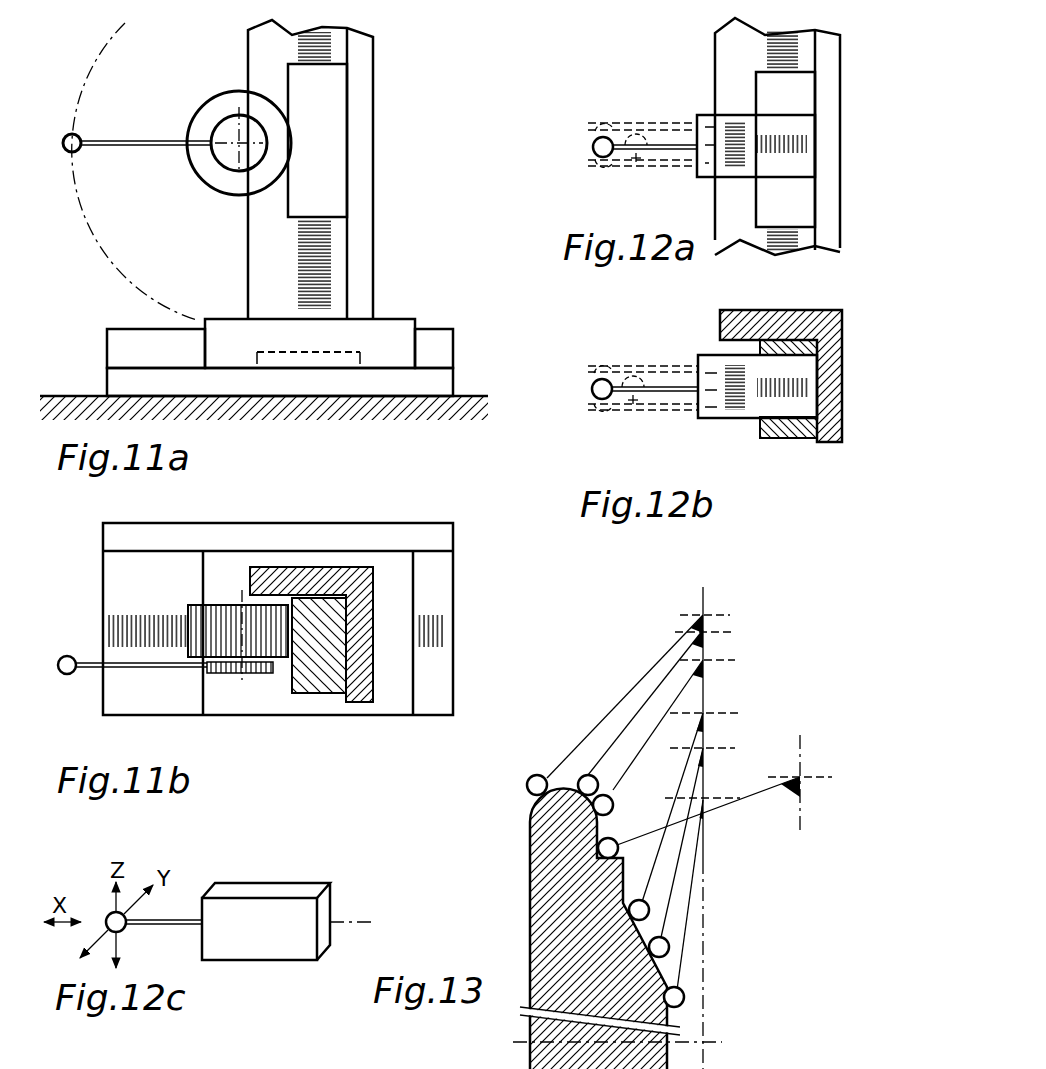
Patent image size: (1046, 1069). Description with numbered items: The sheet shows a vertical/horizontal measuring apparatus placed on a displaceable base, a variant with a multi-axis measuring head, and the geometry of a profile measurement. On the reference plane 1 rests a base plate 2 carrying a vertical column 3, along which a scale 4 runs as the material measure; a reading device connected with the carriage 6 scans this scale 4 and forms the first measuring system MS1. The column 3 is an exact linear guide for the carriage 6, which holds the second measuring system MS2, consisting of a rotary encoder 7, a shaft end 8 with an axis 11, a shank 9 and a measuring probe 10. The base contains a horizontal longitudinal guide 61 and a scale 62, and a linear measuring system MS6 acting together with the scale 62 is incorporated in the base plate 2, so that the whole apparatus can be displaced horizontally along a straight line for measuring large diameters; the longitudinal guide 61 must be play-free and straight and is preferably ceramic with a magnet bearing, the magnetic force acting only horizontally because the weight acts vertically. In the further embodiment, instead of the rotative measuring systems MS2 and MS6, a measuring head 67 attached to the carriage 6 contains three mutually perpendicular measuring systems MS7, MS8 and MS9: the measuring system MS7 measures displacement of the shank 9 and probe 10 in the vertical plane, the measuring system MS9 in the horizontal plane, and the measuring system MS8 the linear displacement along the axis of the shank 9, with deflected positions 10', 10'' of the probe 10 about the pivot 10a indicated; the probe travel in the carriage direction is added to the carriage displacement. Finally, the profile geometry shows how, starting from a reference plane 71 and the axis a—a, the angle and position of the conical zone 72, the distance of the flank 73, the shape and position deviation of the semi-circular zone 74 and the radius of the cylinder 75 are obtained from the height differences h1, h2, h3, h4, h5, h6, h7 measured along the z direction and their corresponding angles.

In FIG. 11A, the reference plane 1 is at (72, 396).
In FIG. 11A, the base plate 2 is at (398, 325).
In FIG. 11B, the base plate 2 is at (397, 702).
In FIG. 11A, the vertical column 3 is at (363, 170).
In FIG. 11B, the vertical column 3 is at (353, 697).
In FIG. 12A, the vertical column 3 is at (830, 228).
In FIG. 12B, the vertical column 3 is at (835, 337).
In FIG. 11A, the scale 4 is at (318, 265).
In FIG. 12A, the scale 4 is at (770, 35).
In FIG. 11A, the carriage 6 is at (335, 113).
In FIG. 11B, the carriage 6 is at (323, 688).
In FIG. 12A, the carriage 6 is at (805, 198).
In FIG. 12B, the carriage 6 is at (793, 438).
In FIG. 11A, the rotary encoder 7 is at (191, 128).
In FIG. 11B, the rotary encoder 7 is at (278, 658).
In FIG. 11A, the shaft end 8 is at (224, 127).
In FIG. 11B, the shaft end 8 is at (230, 675).
In FIG. 11A, the shank 9 is at (136, 141).
In FIG. 11B, the shank 9 is at (97, 668).
In FIG. 12A, the shank 9 is at (658, 143).
In FIG. 12B, the shank 9 is at (672, 388).
In FIG. 11A, the measuring probe 10 is at (95, 160).
In FIG. 11B, the measuring probe 10 is at (73, 639).
In FIG. 12A, the measuring probe 10 is at (581, 144).
In FIG. 12B, the measuring probe 10 is at (581, 390).
In FIG. 12A, the probe ball (displaced position) 10' is at (625, 115).
In FIG. 12B, the probe ball (displaced position) 10' is at (624, 360).
In FIG. 12A, the probe ball (displaced position) 10'' is at (625, 176).
In FIG. 12B, the probe ball (displaced position) 10'' is at (625, 418).
In FIG. 12A, the pivot point of stylus 10a is at (635, 165).
In FIG. 12B, the pivot point of stylus 10a is at (636, 405).
In FIG. 11A, the axis 11 is at (236, 148).
In FIG. 11B, the axis 11 is at (243, 675).
In FIG. 11A, the horizontal longitudinal guide 61 is at (135, 340).
In FIG. 11B, the horizontal longitudinal guide 61 is at (445, 569).
In FIG. 11B, the scale 62 is at (442, 634).
In FIG. 12A, the measuring head 67 is at (805, 100).
In FIG. 12B, the measuring head 67 is at (712, 365).
In FIG. 12C, the measuring head 67 is at (285, 892).
In FIG. 13, the reference plane 71 is at (668, 1020).
In FIG. 13, the conical zone 72 is at (660, 925).
In FIG. 13, the flank 73 is at (628, 880).
In FIG. 13, the semi-circular zone 74 is at (530, 803).
In FIG. 13, the cylinder 75 is at (612, 883).
In FIG. 11A, the first measuring system MS1 is at (342, 229).
In FIG. 12A, the first measuring system MS1 is at (760, 64).
In FIG. 12C, the first measuring system MS1 is at (270, 1068).
In FIG. 11A, the second measuring system MS2 is at (228, 88).
In FIG. 11B, the second measuring system MS2 is at (220, 598).
In FIG. 11A, the linear measuring system MS6 is at (312, 360).
In FIG. 11B, the linear measuring system MS6 is at (420, 655).
In FIG. 12A, the measuring system MS7 is at (735, 112).
In FIG. 12A, the measuring system MS8 is at (806, 144).
In FIG. 12B, the measuring system MS8 is at (807, 388).
In FIG. 12B, the measuring system MS9 is at (738, 415).
In FIG. 13, the difference in height h1 is at (691, 797).
In FIG. 13, the difference in height h2 is at (724, 749).
In FIG. 13, the difference in height h3 is at (724, 710).
In FIG. 13, the difference in height h4 is at (729, 662).
In FIG. 13, the difference in height h5 is at (726, 632).
In FIG. 13, the difference in height h6 is at (729, 607).
In FIG. 13, the difference in height h7 is at (817, 785).
In FIG. 13, the z axis z is at (708, 965).
In FIG. 13, the axis a— a is at (617, 1040).